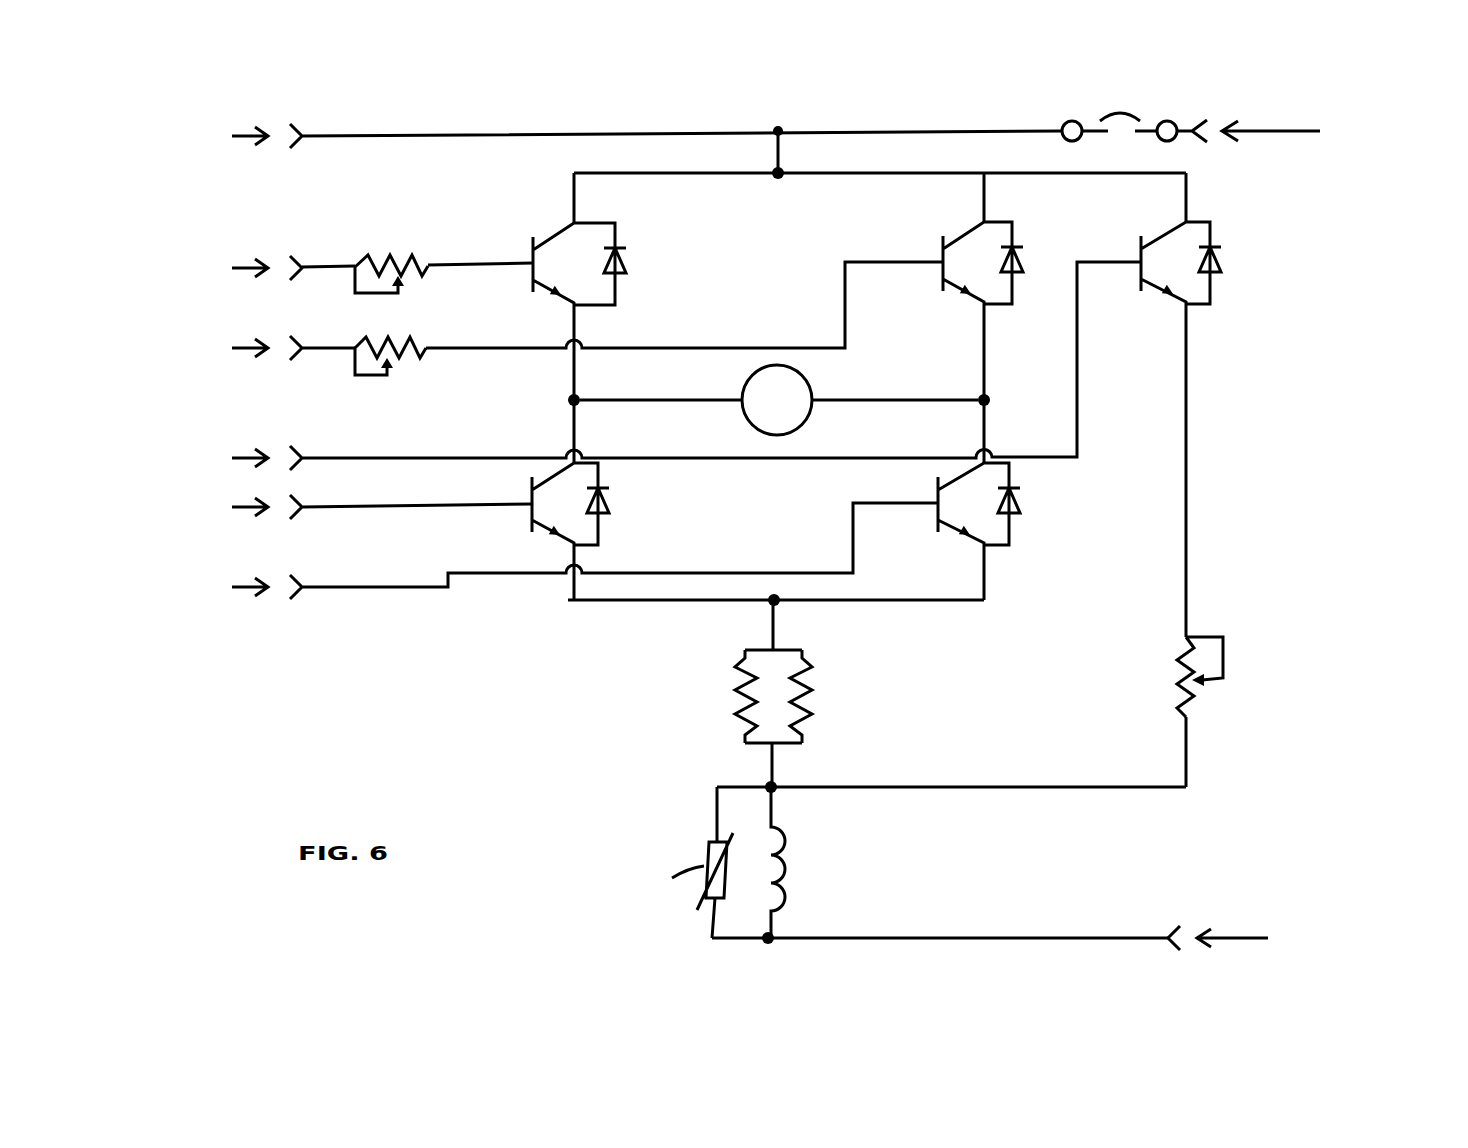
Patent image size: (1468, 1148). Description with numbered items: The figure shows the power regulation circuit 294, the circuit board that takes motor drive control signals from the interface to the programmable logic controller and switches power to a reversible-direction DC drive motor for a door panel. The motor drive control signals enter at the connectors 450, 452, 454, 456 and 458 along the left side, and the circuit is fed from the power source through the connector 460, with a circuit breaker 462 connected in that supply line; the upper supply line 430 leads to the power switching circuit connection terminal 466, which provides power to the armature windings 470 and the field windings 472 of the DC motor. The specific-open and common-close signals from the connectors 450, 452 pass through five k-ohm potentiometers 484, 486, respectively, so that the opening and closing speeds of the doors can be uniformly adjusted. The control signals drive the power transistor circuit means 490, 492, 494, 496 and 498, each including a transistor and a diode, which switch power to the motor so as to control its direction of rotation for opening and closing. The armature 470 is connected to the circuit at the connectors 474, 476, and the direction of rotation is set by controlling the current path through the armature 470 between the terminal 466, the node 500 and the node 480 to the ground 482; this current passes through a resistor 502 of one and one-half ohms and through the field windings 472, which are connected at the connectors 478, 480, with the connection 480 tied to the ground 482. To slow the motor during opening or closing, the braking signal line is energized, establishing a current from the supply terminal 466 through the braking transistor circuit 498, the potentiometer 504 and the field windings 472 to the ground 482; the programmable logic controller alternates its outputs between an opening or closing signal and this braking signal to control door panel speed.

The power regulation circuit 294 is at (246, 679).
The DC bus input line 430 is at (280, 126).
The connector 450 is at (280, 258).
The connector 452 is at (280, 338).
The connector 454 is at (280, 448).
The connector 456 is at (280, 497).
The connector 458 is at (280, 577).
The connector 460 is at (1214, 125).
The circuit breaker 462 is at (1117, 113).
The power switching circuit connection terminal 466 is at (790, 110).
The armature windings 470 is at (808, 383).
The field windings 472 is at (788, 837).
The connector 474 is at (1066, 121).
The connector 476 is at (998, 392).
The connector 478 is at (784, 781).
The connector 480 is at (783, 931).
The ground 482 is at (1187, 932).
The potentiometer 484 is at (390, 262).
The potentiometer 486 is at (415, 337).
The power transistor circuit means 490 is at (643, 247).
The power transistor circuit means 492 is at (1035, 494).
The power transistor circuit means 494 is at (1040, 236).
The power transistor circuit means 496 is at (629, 498).
The braking transistor circuit 498 is at (1285, 225).
The node 500 is at (763, 602).
The resistor 502 is at (816, 678).
The potentiometer 504 is at (1227, 697).